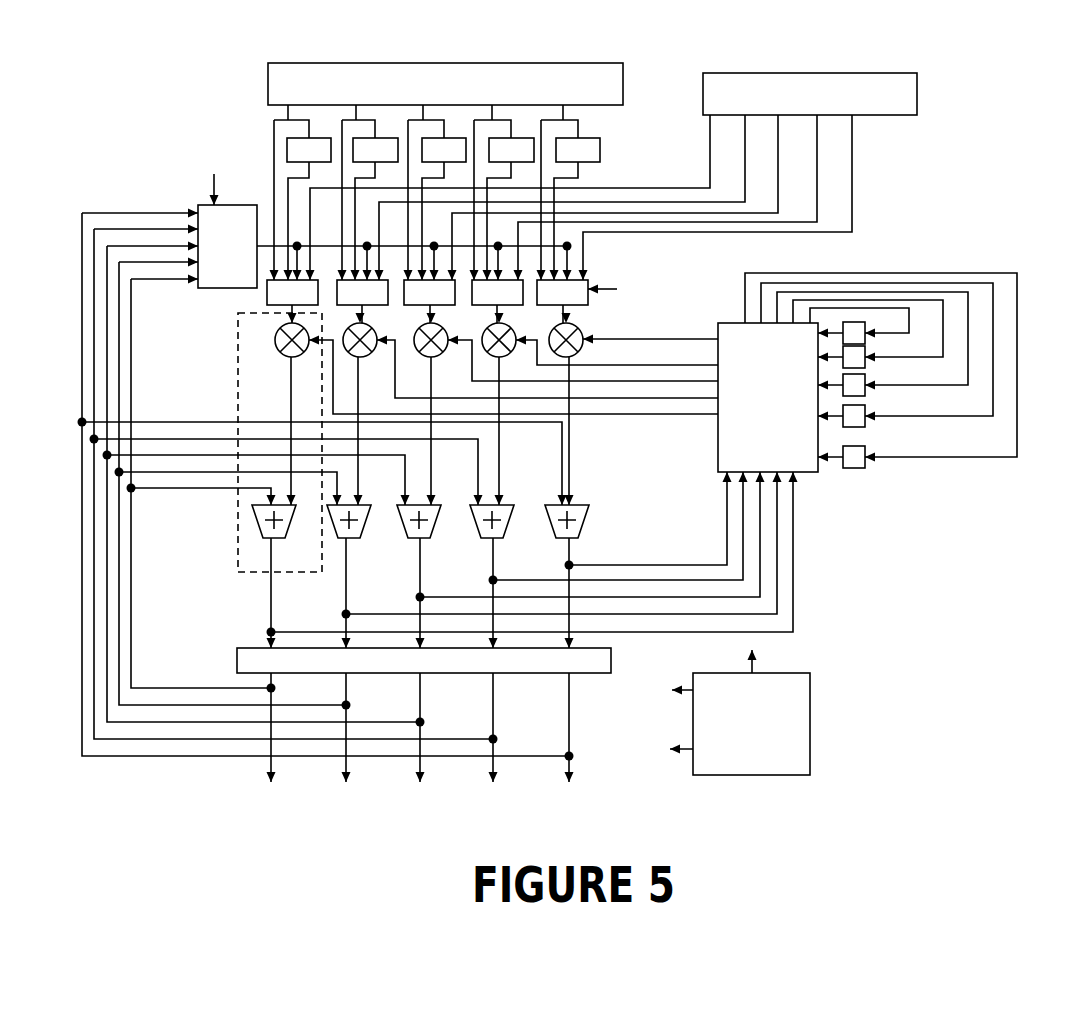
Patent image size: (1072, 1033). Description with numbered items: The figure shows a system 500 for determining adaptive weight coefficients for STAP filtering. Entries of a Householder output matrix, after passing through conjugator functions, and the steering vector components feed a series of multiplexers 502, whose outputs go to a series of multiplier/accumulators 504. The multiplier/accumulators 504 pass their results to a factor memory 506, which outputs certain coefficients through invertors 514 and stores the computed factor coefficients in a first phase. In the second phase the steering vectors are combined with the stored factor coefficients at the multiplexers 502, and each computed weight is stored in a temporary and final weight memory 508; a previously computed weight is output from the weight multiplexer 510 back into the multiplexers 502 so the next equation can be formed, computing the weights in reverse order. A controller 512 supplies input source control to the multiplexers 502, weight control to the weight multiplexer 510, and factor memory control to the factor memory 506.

The system 500 is at (993, 98).
The multiplexers 502 is at (255, 300).
The multiplier/accumulators 504 is at (262, 340).
The factor memory 506 is at (768, 397).
The temporary and final weight memory 508 is at (228, 652).
The weight multiplexer 510 is at (227, 246).
The controller 512 is at (751, 724).
The invertors 514 is at (857, 485).